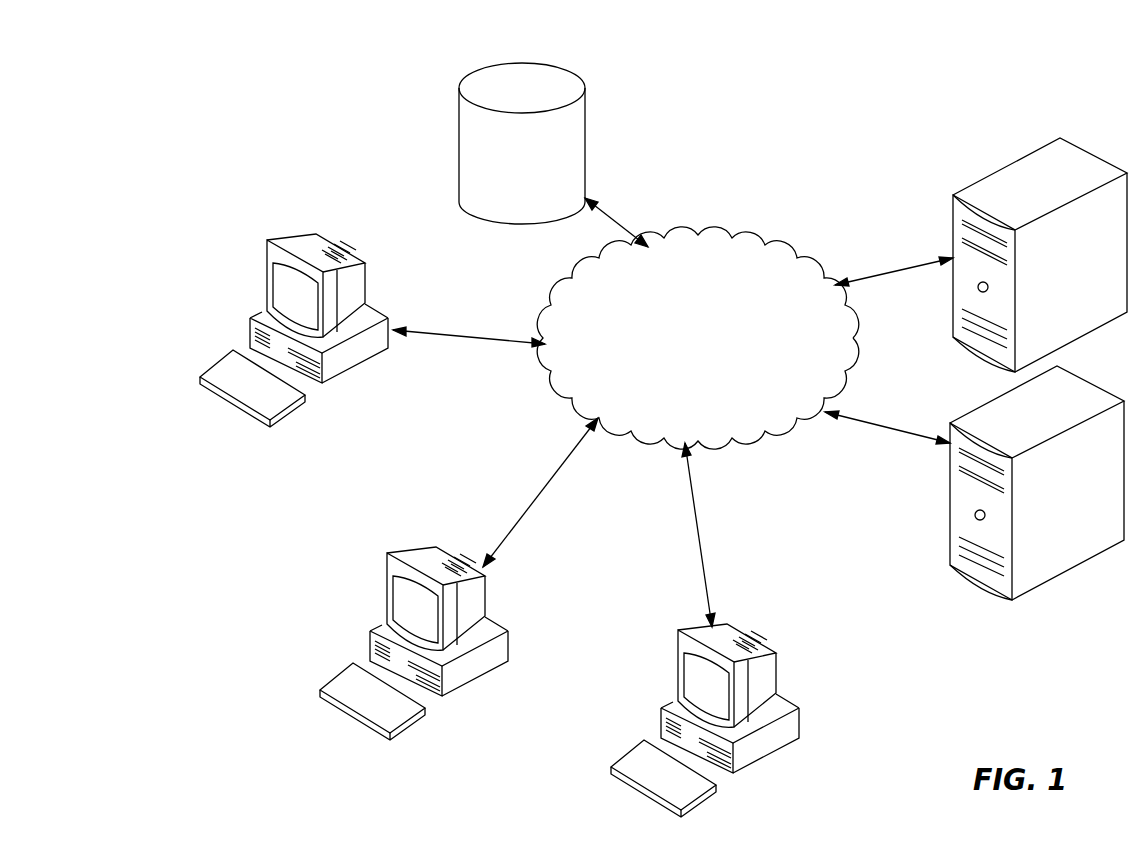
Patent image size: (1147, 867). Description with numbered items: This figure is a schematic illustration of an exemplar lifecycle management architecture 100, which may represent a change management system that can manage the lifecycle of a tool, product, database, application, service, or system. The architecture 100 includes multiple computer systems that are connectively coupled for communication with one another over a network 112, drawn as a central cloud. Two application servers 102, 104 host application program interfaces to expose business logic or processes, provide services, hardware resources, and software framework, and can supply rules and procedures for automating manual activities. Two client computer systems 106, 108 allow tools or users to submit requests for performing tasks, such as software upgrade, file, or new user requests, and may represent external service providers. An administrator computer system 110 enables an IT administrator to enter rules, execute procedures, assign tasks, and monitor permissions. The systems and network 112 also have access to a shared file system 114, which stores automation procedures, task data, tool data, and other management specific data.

The lifecycle management architecture 100 is at (175, 88).
The application server 102 is at (953, 310).
The application server 104 is at (950, 515).
The client computer system 106 is at (637, 792).
The client computer system 108 is at (333, 708).
The administrator computer system 110 is at (230, 398).
The network 112 is at (555, 375).
The shared file system 114 is at (455, 127).